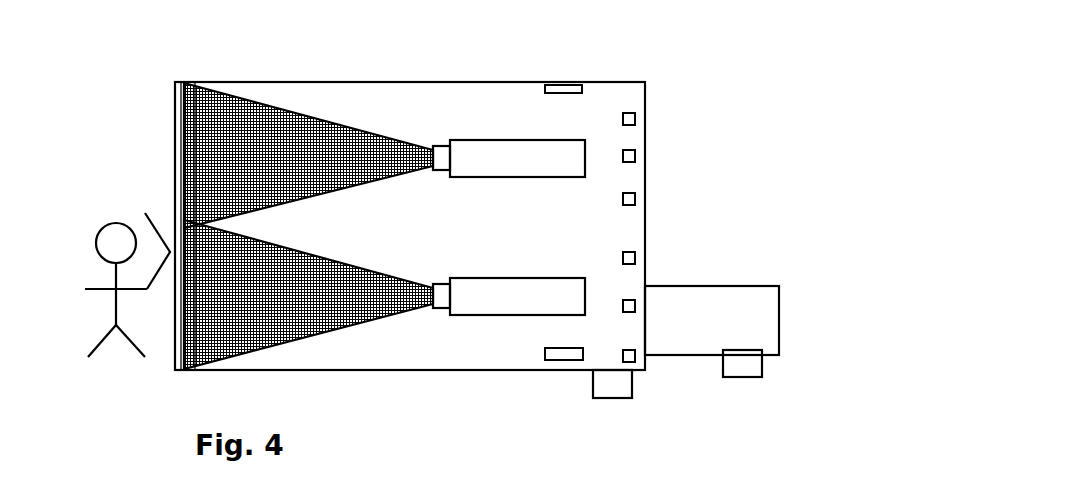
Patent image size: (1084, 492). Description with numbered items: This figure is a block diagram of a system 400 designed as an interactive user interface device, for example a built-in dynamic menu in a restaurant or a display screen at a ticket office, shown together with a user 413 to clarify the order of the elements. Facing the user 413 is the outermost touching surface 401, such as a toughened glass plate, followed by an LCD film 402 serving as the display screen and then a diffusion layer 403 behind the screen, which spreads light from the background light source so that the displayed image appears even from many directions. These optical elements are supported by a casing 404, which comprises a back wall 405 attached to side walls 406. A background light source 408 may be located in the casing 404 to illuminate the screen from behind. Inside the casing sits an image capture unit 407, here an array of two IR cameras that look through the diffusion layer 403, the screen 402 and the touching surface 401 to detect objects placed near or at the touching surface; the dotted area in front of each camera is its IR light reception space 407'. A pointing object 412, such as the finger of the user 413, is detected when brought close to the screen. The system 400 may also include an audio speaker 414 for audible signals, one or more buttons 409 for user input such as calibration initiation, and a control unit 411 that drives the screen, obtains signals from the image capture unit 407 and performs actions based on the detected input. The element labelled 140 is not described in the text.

The system 400 is at (237, 43).
The touching surface 401 is at (178, 95).
The LCD film 402 is at (185, 143).
The diffusion layer 403 is at (193, 197).
The casing 404 is at (313, 78).
The back wall 405 is at (648, 82).
The side walls 406 is at (403, 80).
The image capture unit 407 is at (516, 209).
The IR light reception space 407' is at (328, 226).
The background light source 408 is at (637, 113).
The button 409 is at (737, 377).
The control unit 411 is at (703, 285).
The pointing object 412 is at (145, 213).
The user 413 is at (90, 356).
The audio speaker 414 is at (605, 398).
The speaker 140 is at (565, 82).